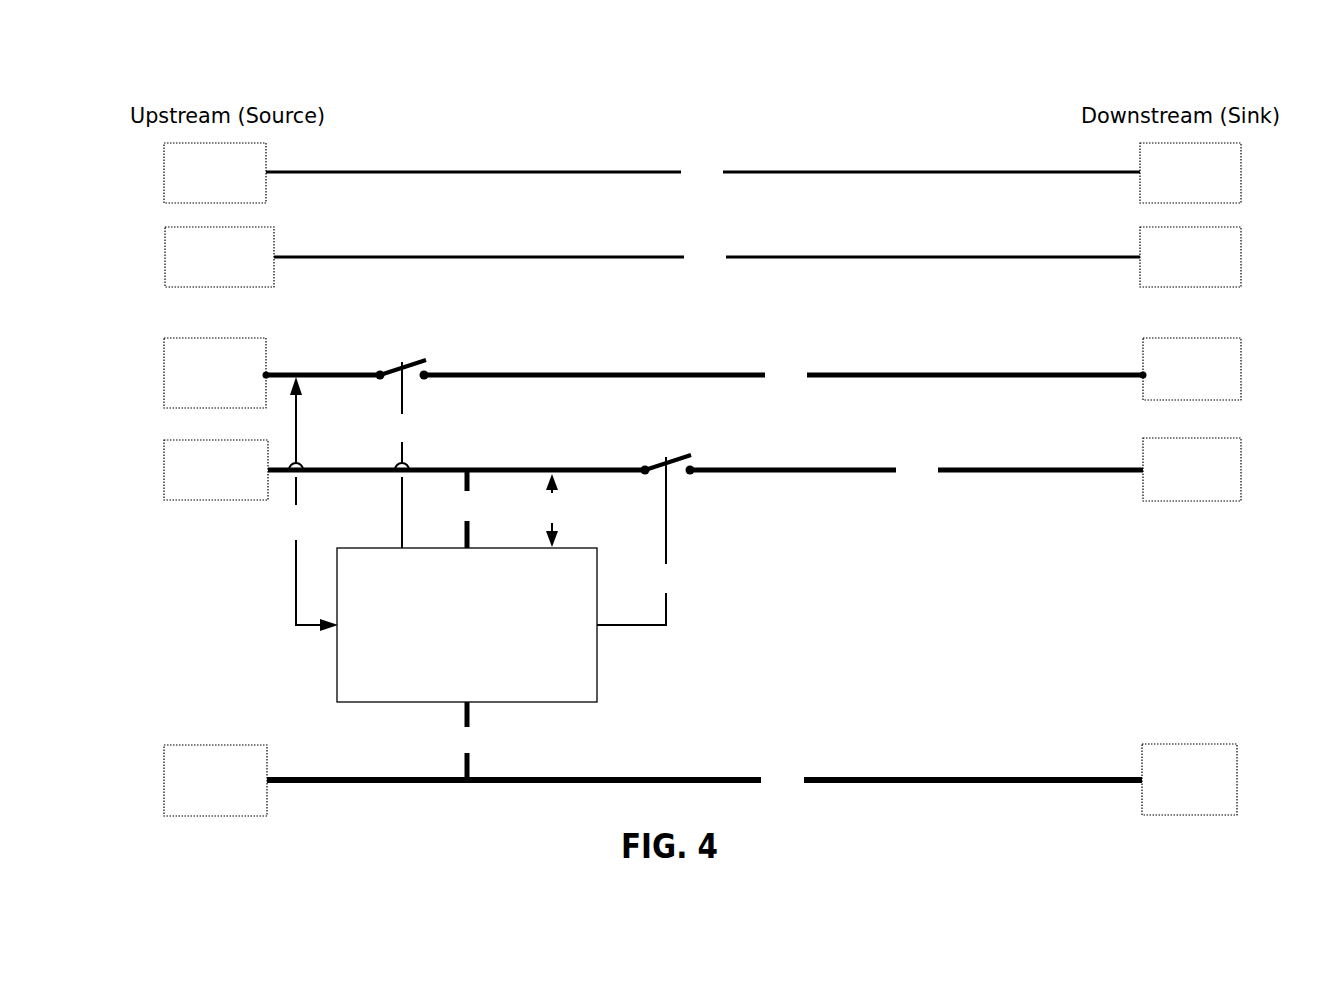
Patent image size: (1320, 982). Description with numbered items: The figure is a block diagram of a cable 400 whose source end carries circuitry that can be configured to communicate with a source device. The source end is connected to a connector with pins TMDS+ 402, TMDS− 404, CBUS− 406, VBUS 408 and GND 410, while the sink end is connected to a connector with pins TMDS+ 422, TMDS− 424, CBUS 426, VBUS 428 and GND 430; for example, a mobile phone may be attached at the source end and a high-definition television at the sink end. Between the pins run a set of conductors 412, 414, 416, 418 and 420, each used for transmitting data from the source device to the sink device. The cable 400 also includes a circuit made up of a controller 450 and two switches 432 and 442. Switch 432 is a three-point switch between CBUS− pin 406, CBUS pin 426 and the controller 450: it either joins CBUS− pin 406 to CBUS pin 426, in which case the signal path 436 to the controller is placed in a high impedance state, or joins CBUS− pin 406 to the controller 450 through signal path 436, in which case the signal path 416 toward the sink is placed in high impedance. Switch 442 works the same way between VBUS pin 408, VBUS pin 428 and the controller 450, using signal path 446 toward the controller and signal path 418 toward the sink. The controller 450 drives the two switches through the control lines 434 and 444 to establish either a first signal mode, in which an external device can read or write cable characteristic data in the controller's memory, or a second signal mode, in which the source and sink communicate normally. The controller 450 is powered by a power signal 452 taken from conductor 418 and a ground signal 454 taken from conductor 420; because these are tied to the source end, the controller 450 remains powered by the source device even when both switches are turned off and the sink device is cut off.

The cable 400 is at (1236, 44).
The TMDS+ pin 402 is at (215, 173).
The TMDS− pin 404 is at (219, 257).
The CBUS− pin 406 is at (215, 373).
The VBUS pin 408 is at (216, 470).
The GND pin 410 is at (215, 780).
The conductor 412 is at (703, 173).
The conductor 414 is at (707, 258).
The conductor (signal path) 416 is at (785, 376).
The conductor (signal path) 418 is at (916, 471).
The conductor 420 is at (704, 781).
The TMDS+ pin 422 is at (1190, 173).
The TMDS− pin 424 is at (1190, 257).
The CBUS pin 426 is at (1192, 369).
The VBUS pin 428 is at (1192, 469).
The GND pin 430 is at (1189, 779).
The switch 432 is at (402, 358).
The CBUS switch control line 434 is at (402, 455).
The signal path 436 is at (307, 504).
The switch 442 is at (668, 455).
The VBUS switch control line 444 is at (641, 541).
The signal path 446 is at (553, 510).
The controller 450 is at (436, 623).
The power signal 452 is at (468, 509).
The ground signal 454 is at (468, 741).